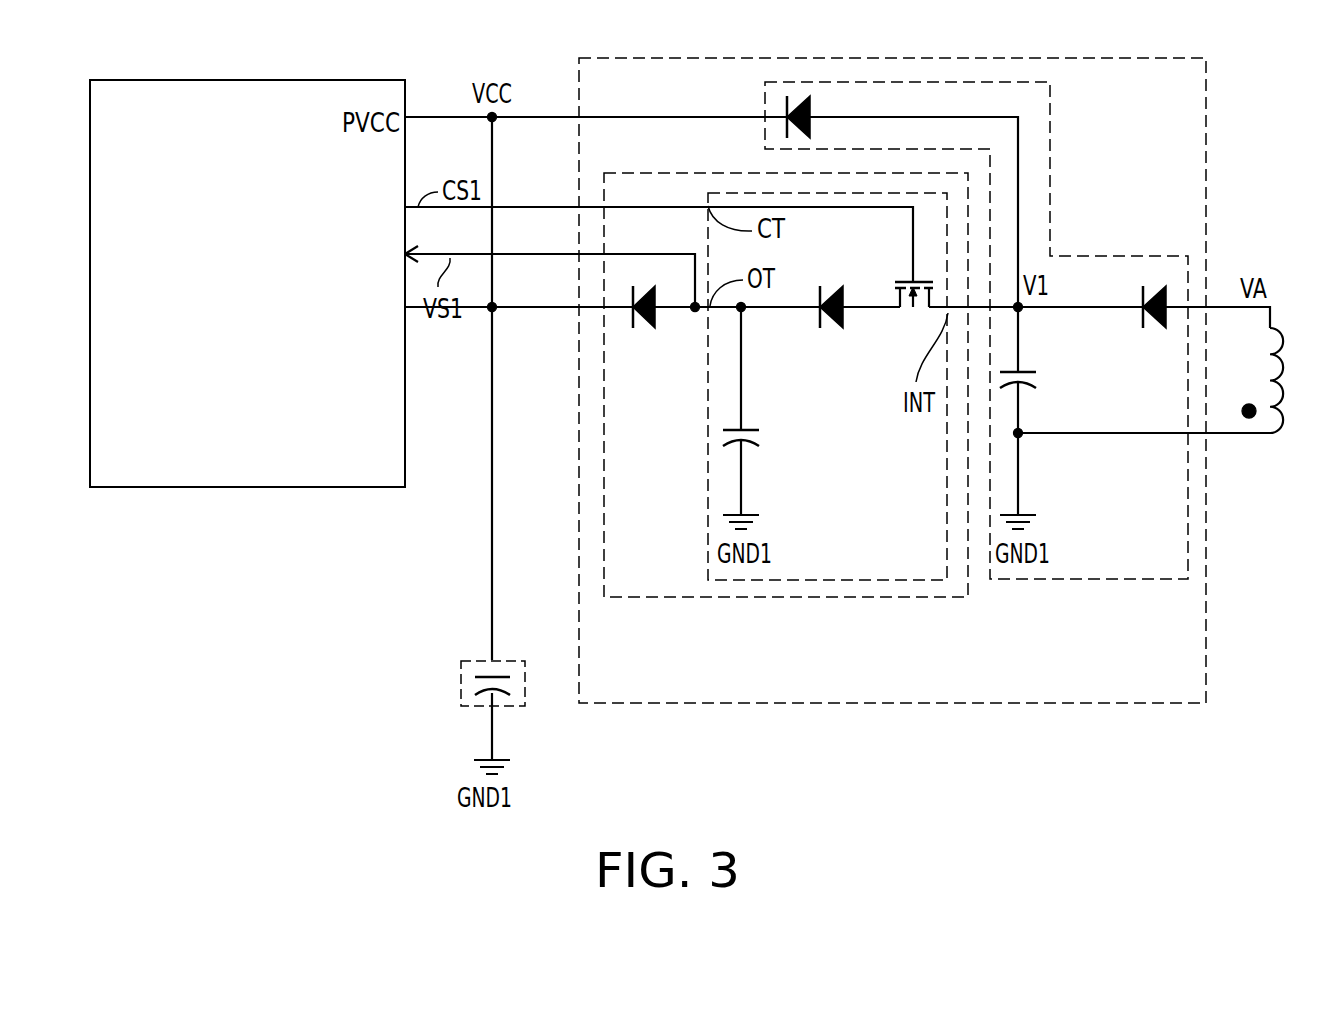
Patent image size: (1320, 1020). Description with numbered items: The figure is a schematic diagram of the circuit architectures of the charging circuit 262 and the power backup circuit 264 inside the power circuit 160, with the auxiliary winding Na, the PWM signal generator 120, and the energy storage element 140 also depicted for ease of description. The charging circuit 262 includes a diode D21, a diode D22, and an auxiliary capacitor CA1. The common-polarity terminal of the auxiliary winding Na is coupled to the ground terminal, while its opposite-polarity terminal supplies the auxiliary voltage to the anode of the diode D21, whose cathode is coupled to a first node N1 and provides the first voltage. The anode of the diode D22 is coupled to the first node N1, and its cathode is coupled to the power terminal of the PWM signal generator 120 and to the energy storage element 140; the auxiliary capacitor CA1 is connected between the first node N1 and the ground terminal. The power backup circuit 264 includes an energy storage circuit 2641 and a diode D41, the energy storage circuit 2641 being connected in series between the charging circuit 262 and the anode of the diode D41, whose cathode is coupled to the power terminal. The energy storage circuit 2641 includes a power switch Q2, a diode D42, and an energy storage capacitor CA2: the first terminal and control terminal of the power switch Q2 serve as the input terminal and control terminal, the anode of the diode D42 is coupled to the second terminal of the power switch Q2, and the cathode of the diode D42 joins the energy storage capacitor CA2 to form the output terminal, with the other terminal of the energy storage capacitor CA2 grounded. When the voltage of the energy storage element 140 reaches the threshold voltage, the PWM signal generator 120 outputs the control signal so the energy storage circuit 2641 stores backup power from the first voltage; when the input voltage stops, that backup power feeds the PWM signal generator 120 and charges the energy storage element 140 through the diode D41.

The PWM signal generator 120 is at (242, 488).
The energy storage element 140 is at (452, 683).
The power circuit 160 is at (893, 703).
The charging circuit 262 is at (1088, 580).
The power backup circuit 264 is at (877, 597).
The energy storage circuit 2641 is at (788, 580).
The diode D21 is at (1152, 328).
The diode D22 is at (812, 108).
The diode D41 is at (644, 328).
The diode D42 is at (830, 328).
The power switch Q2 is at (914, 314).
The auxiliary capacitor CA1 is at (1040, 411).
The energy storage capacitor CA2 is at (762, 411).
The first node N1 is at (1021, 311).
The auxiliary winding Na is at (1168, 380).